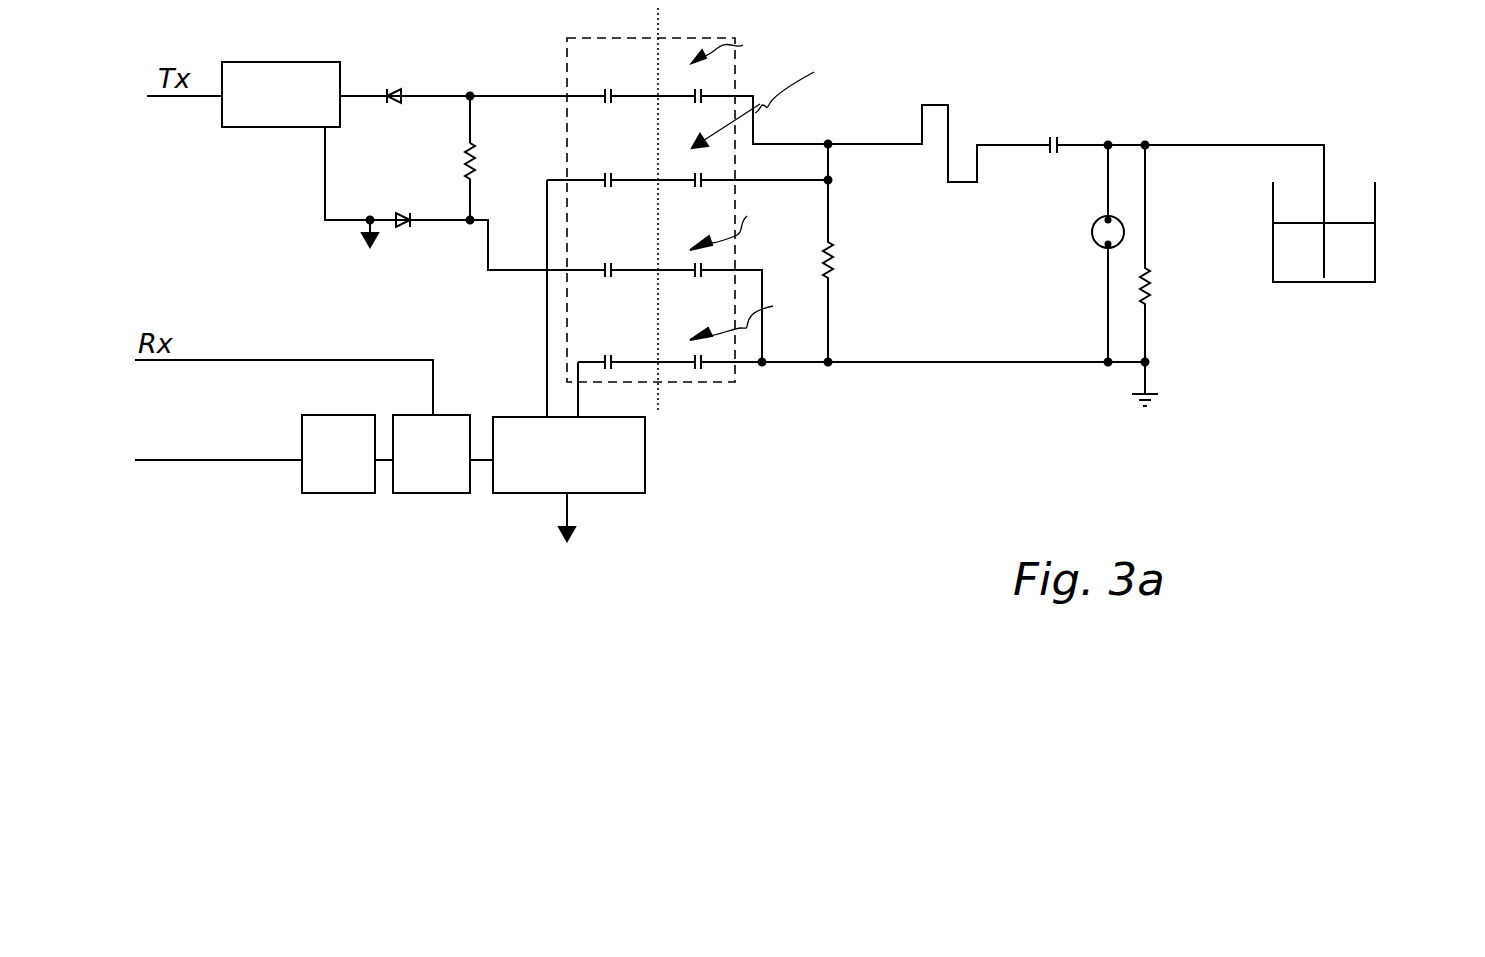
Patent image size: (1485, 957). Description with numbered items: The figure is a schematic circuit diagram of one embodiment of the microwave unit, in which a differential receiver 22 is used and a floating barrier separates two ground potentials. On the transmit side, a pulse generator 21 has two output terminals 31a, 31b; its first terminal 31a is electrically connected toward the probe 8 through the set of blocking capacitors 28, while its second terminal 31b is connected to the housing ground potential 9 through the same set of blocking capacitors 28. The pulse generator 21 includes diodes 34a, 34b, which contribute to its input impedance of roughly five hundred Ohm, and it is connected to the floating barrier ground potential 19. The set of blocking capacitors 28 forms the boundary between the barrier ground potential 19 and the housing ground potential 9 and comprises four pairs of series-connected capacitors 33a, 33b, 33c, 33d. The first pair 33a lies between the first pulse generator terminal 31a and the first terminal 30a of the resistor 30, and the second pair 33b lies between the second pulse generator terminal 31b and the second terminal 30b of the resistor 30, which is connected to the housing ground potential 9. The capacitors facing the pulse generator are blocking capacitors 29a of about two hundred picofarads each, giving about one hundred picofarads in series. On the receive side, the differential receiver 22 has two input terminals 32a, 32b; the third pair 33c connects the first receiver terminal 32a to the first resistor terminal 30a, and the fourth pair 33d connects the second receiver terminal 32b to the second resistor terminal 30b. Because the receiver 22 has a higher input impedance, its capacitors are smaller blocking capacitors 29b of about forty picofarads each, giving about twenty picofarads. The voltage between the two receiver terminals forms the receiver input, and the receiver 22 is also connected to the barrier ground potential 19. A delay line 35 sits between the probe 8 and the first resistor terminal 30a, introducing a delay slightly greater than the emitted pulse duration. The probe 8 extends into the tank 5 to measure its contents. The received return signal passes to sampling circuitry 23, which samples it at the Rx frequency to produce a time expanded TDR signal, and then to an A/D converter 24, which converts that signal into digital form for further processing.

The container with liquid 5 is at (1376, 205).
The probe 8 is at (1326, 190).
The housing ground potential 9 is at (1152, 397).
The barrier ground potential 19 is at (374, 242).
The pulse generator 21 is at (258, 127).
The differential receiver 22 is at (646, 455).
The sampling circuitry 23 is at (436, 493).
The A/D converter 24 is at (333, 493).
The set of blocking capacitors 28 is at (567, 82).
The blocking capacitors 29a is at (603, 100).
The blocking capacitors 29b is at (606, 186).
The resistor 30 is at (832, 266).
The first terminal of the resistor 30a is at (830, 148).
The second terminal of the resistor 30b is at (830, 360).
The first output terminal of the pulse generator 31a is at (343, 96).
The second output terminal of the pulse generator 31b is at (330, 127).
The first input terminal of the differential receiver 32a is at (547, 416).
The second input terminal of the differential receiver 32b is at (581, 415).
The first pair of blocking capacitors 33a is at (746, 38).
The second pair of blocking capacitors 33b is at (745, 226).
The third pair of blocking capacitors 33c is at (777, 104).
The fourth pair of blocking capacitors 33d is at (758, 316).
The diode 34a is at (396, 88).
The diode 34b is at (403, 212).
The delay line 35 is at (950, 112).